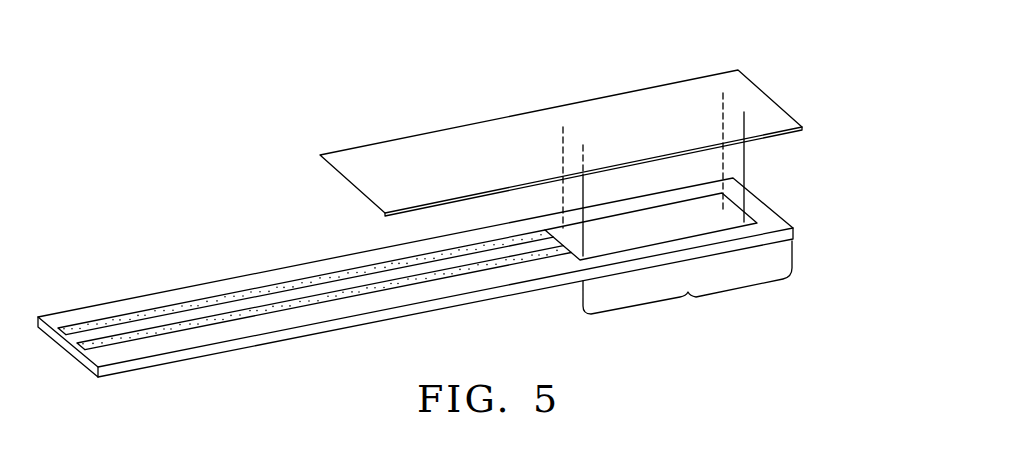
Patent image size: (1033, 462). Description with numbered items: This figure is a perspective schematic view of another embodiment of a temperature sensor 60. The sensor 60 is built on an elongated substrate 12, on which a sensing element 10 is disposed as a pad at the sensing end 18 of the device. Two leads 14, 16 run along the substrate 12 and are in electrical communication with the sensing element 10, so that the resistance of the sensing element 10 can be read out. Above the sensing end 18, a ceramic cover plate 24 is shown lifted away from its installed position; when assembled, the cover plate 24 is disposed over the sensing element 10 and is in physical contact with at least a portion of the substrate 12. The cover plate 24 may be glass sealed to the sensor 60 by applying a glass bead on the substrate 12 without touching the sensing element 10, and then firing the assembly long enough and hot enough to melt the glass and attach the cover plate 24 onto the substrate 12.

The sensing element 10 is at (720, 212).
The substrate 12 is at (828, 197).
The lead 14 is at (277, 290).
The lead 16 is at (357, 293).
The sensing end 18 is at (687, 293).
The ceramic cover plate 24 is at (732, 87).
The temperature sensor 60 is at (448, 201).